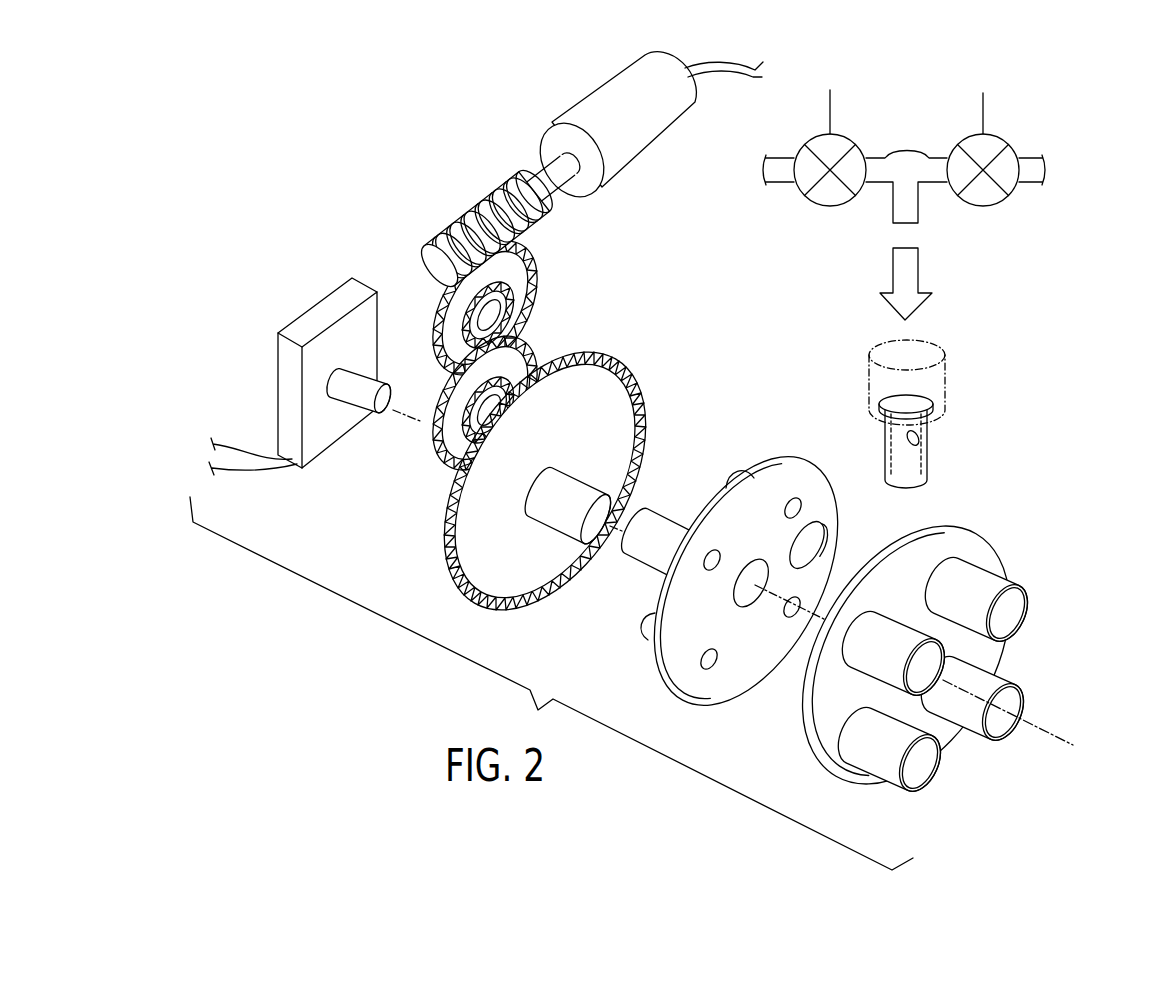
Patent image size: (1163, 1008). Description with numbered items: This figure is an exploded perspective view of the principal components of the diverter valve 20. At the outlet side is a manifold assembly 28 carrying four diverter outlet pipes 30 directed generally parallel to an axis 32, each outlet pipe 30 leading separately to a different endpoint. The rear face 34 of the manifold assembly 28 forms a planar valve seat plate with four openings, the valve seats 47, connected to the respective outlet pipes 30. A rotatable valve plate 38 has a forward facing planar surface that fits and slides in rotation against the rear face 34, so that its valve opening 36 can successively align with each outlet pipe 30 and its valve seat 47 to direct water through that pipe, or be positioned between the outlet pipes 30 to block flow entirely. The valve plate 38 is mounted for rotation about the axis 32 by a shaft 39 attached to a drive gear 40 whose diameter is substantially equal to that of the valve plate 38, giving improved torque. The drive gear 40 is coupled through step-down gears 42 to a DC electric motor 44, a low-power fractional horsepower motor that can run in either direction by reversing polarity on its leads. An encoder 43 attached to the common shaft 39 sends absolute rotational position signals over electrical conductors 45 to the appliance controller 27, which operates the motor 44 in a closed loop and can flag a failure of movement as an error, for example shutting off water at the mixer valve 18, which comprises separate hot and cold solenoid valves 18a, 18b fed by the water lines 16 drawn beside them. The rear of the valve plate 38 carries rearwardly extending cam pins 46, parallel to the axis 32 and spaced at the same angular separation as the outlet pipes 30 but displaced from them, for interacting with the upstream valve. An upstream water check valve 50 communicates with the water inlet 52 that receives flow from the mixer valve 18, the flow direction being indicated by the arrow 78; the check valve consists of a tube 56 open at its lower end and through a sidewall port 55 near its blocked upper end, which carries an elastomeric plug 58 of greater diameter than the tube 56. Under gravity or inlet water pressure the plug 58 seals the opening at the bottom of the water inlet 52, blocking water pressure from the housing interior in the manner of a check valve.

The fluid conduit 16 is at (784, 157).
The mixer valve 18 is at (940, 164).
The hot solenoid valve 18a is at (828, 206).
The cold solenoid valve 18b is at (985, 207).
The diverter valve 20 is at (1060, 363).
The appliance controller 27 is at (878, 98).
The manifold assembly 28 is at (1058, 607).
The diverter outlet pipes 30 is at (985, 593).
The axis 32 is at (1040, 727).
The rear face 34 is at (912, 525).
The valve opening 36 is at (824, 541).
The valve plate 38 is at (705, 696).
The shaft 39 is at (360, 403).
The drive gear 40 is at (620, 395).
The step-down gears 42 is at (435, 397).
The encoder 43 is at (313, 308).
The DC electric motor 44 is at (593, 112).
The electrical conductors 45 is at (240, 452).
The cam pins 46 is at (728, 480).
The valve seats 47 is at (790, 733).
The water check valve 50 is at (936, 405).
The water inlet 52 is at (940, 348).
The sidewall port 55 is at (910, 440).
The tube 56 is at (915, 468).
The elastomeric plug 58 is at (895, 400).
The flow direction arrow 78 is at (918, 272).